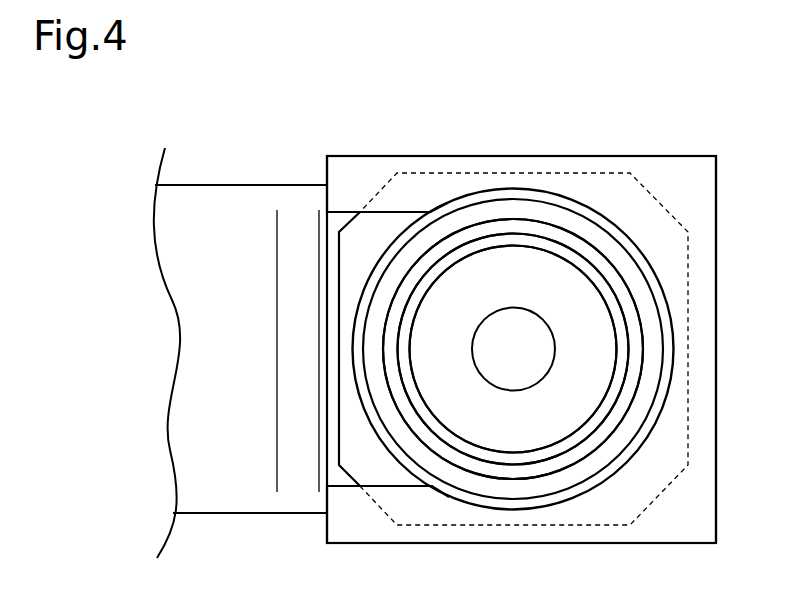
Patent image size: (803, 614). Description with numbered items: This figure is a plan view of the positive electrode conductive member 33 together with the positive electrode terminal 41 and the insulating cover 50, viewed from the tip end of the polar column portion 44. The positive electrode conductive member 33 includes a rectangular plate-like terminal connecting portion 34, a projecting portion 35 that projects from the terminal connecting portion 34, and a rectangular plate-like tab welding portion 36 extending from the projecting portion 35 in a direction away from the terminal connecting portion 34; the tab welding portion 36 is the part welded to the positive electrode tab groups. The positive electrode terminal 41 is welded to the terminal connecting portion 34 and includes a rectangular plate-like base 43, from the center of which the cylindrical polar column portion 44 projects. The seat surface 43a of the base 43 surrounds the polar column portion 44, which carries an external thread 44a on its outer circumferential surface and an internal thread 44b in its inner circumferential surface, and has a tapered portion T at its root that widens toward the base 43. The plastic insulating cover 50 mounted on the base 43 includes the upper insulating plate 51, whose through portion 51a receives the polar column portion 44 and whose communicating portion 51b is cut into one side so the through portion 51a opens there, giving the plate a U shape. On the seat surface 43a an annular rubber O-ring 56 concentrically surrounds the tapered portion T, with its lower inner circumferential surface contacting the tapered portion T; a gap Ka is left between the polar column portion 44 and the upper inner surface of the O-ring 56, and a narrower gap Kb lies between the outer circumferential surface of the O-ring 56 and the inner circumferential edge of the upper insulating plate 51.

The positive electrode conductive member 33 is at (214, 185).
The terminal connecting portion 34 is at (338, 478).
The projecting portion 35 is at (298, 505).
The tab welding portion 36 is at (208, 505).
The positive electrode terminal 41 is at (603, 342).
The base 43 is at (675, 480).
The seat surface 43a is at (405, 473).
The polar column portion 44 is at (575, 388).
The external thread 44a is at (565, 453).
The internal thread 44b is at (509, 312).
The insulating cover 50 is at (716, 173).
The upper insulating plate 51 is at (712, 210).
The through portion 51a is at (453, 201).
The communicating portion 51b is at (388, 213).
The O-ring 56 is at (380, 386).
The gap Ka is at (570, 242).
The gap Kb is at (547, 197).
The tapered portion T is at (613, 273).